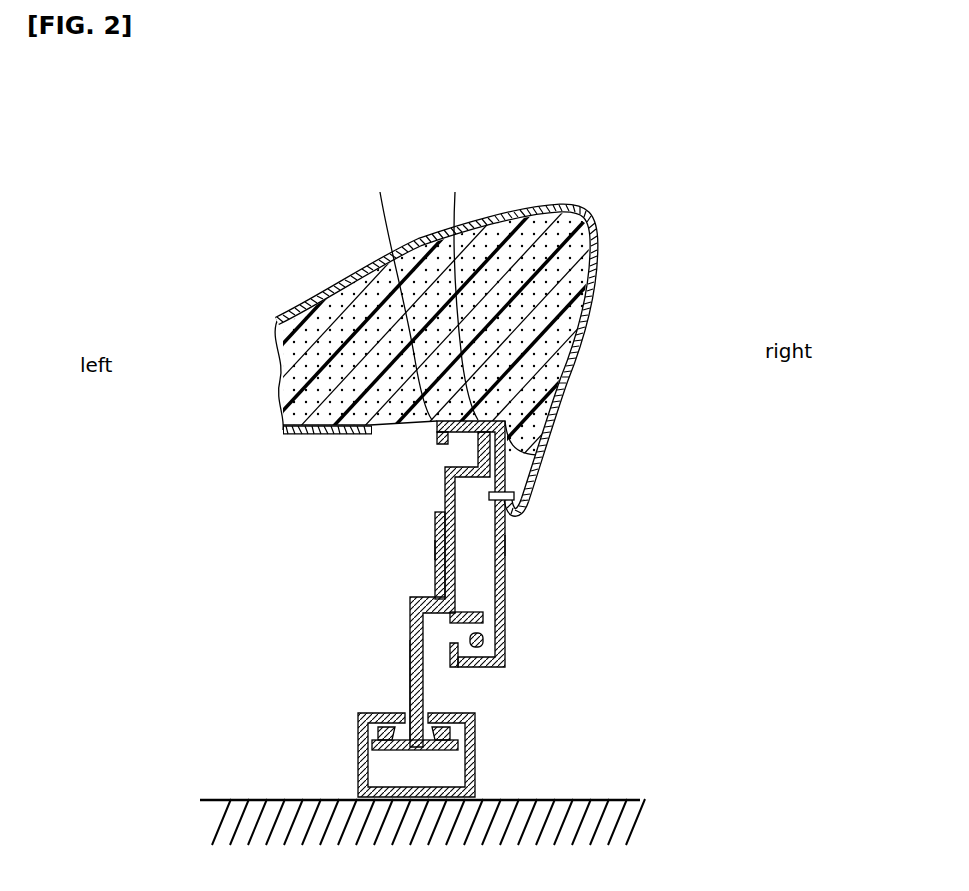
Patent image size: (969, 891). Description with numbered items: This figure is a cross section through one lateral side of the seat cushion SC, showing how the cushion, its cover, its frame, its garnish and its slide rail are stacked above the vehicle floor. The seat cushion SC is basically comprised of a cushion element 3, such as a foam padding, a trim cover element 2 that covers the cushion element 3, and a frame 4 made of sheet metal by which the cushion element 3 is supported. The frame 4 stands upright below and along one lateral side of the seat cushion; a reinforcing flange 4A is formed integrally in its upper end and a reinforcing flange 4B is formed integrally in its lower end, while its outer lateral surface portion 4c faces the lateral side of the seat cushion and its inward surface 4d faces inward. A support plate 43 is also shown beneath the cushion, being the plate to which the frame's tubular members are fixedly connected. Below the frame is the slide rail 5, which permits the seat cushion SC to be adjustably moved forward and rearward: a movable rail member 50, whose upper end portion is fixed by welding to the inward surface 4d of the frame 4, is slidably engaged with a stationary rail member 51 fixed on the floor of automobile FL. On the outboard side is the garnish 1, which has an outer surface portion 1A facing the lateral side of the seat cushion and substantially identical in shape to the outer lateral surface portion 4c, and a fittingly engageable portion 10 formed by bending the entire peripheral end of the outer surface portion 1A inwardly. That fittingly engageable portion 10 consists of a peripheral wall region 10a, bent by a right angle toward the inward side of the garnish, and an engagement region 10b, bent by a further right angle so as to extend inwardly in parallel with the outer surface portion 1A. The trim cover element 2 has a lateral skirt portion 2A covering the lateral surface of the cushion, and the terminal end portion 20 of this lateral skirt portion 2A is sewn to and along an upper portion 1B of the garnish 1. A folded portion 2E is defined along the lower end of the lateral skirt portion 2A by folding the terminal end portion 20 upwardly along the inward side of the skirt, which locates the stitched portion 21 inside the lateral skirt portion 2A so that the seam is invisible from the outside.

The seat cushion SC is at (605, 199).
The cushion element 3 is at (555, 270).
The trim cover element 2 is at (586, 348).
The lateral skirt portion 2A is at (590, 315).
The folded portion 2E is at (535, 504).
The terminal end portion 20 is at (548, 450).
The stitched portion 21 is at (512, 494).
The support plate 43 is at (318, 436).
The fittingly engageable portion 10 is at (470, 168).
The peripheral wall region 10a is at (527, 704).
The engagement region 10b is at (527, 757).
The frame 4 is at (505, 572).
The reinforcing flange 4A is at (440, 460).
The reinforcing flange 4B is at (505, 645).
The outer lateral surface portion 4c is at (505, 545).
The inward surface 4d is at (440, 500).
The garnish 1 is at (505, 600).
The outer surface portion 1A is at (507, 623).
The upper portion 1B is at (440, 550).
The slide rail 5 is at (229, 630).
The movable rail member 50 is at (410, 630).
The stationary rail member 51 is at (368, 748).
The floor of automobile FL is at (236, 800).